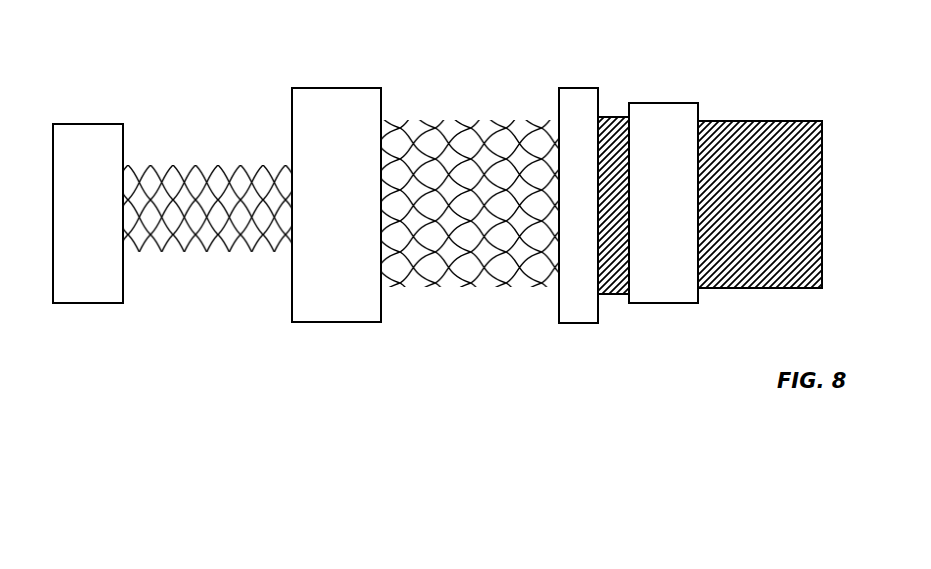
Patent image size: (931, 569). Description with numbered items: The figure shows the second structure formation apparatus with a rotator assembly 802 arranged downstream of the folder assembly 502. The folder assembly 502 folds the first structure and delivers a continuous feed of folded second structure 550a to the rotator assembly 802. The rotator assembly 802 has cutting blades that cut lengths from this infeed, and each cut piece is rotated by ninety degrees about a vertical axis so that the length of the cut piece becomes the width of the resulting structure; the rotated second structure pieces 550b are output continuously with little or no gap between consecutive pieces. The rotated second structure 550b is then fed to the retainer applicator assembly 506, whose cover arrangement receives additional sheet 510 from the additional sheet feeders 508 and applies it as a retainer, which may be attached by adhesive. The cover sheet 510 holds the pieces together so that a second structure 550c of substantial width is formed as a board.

The folder assembly 502 is at (85, 305).
The rotator assembly 802 is at (327, 312).
The additional sheet feeders 508 is at (578, 302).
The retainer applicator assembly 506 is at (656, 307).
The additional sheet 510 is at (613, 294).
The folded second structure 550a is at (187, 140).
The second structure piece 550b is at (457, 98).
The second structure 550c is at (805, 105).